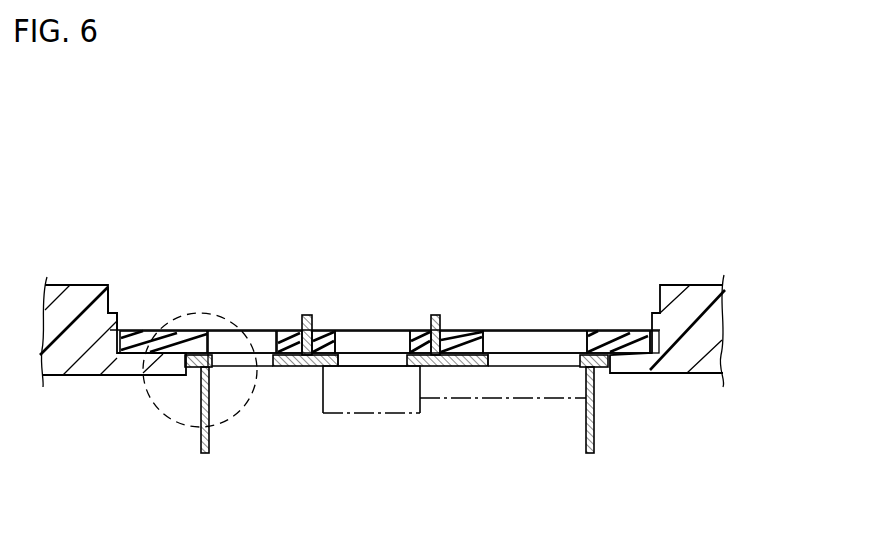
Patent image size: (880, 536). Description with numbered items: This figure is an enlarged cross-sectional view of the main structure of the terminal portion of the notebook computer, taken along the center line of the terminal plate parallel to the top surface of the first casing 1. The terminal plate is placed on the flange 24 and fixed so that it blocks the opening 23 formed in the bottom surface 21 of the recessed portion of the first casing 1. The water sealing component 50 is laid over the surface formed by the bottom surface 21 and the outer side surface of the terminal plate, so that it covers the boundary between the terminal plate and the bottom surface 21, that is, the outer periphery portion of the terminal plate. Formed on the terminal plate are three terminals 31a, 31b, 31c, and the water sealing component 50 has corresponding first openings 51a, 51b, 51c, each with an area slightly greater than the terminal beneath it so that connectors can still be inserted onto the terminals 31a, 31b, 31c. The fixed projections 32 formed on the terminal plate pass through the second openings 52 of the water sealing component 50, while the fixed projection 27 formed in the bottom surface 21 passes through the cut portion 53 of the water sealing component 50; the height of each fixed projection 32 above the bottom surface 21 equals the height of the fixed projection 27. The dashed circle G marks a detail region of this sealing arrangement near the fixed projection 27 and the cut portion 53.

The first casing 1 is at (700, 332).
The bottom surface of the recessed portion 21 is at (625, 332).
The opening 23 is at (307, 417).
The flange 24 is at (603, 370).
The fixed projection 27 is at (118, 318).
The terminal 31a is at (262, 386).
The terminal 31b is at (370, 387).
The terminal 31c is at (507, 386).
The fixed projection 32 is at (307, 314).
The water sealing component 50 is at (325, 354).
The first opening 51a is at (230, 341).
The first opening 51b is at (386, 341).
The first opening 51c is at (551, 341).
The second opening 52 is at (293, 330).
The cut portion 53 is at (123, 322).
The gap region G is at (197, 310).